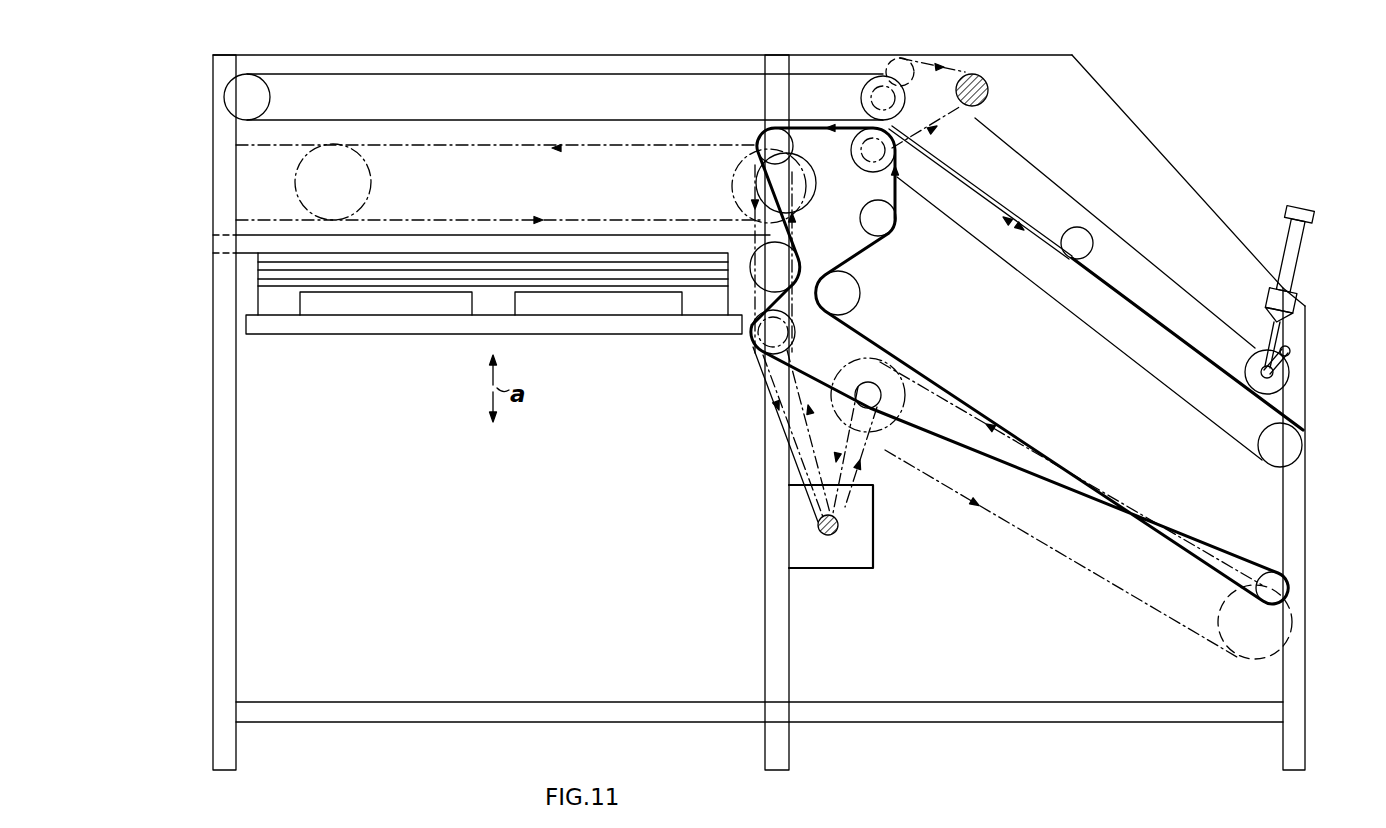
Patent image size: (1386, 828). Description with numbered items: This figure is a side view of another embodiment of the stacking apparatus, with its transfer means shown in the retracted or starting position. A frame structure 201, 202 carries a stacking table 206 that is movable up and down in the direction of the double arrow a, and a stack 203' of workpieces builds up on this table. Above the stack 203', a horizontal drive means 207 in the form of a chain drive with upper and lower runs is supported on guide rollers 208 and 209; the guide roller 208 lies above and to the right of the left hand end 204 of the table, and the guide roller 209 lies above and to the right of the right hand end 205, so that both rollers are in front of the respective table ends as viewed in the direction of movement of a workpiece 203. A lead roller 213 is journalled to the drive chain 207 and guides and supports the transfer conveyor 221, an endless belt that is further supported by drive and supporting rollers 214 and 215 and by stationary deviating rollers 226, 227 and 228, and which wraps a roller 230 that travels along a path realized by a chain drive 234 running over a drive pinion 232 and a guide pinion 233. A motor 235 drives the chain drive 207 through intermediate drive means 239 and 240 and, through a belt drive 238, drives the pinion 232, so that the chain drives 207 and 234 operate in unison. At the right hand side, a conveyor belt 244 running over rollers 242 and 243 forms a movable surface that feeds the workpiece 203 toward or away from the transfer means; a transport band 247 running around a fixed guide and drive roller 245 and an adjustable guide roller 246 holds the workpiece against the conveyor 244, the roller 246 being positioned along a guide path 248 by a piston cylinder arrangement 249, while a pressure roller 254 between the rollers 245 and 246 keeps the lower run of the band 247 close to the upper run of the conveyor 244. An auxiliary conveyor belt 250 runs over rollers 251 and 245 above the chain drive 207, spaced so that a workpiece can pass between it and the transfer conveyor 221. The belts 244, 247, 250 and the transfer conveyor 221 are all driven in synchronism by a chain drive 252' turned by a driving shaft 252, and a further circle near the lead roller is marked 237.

The frame structure 201 is at (447, 722).
The frame structure 202 is at (210, 508).
The workpiece 203 is at (1187, 344).
The stack 203' is at (493, 316).
The left hand end of the stacking table 204 is at (272, 326).
The right hand end of the stacking table 205 is at (665, 326).
The stacking table 206 is at (540, 326).
The horizontal drive means 207 is at (470, 148).
The guide roller 208 is at (360, 178).
The guide roller 209 is at (750, 162).
The lead roller 213 is at (765, 128).
The drive and supporting roller 214 is at (866, 172).
The drive and supporting roller 215 is at (757, 352).
The transfer conveyor 221 is at (845, 125).
The stationary deviating roller 226 is at (898, 237).
The stationary deviating roller 227 is at (853, 293).
The stationary deviating roller 228 is at (787, 260).
The guide roller 230 is at (1280, 585).
The drive pinion 232 is at (887, 370).
The guide pinion 233 is at (1237, 648).
The chain drive 234 is at (1070, 467).
The motor 235 is at (828, 568).
The roller 237 is at (757, 187).
The belt drive 238 is at (847, 497).
The intermediate drive means 239 is at (783, 420).
The intermediate drive means 240 is at (792, 225).
The roller 242 is at (898, 176).
The roller 243 is at (1275, 460).
The conveyor belt 244 is at (1085, 335).
The guide and drive roller 245 is at (877, 76).
The guide roller 246 is at (1250, 380).
The transport band 247 is at (1133, 250).
The guide path 248 is at (1290, 350).
The piston cylinder arrangement 249 is at (1277, 283).
The auxiliary conveyor belt 250 is at (520, 72).
The roller 251 is at (245, 108).
The driving shaft 252 is at (970, 111).
The chain drive 252' is at (945, 58).
The pressure roller 254 is at (1083, 233).